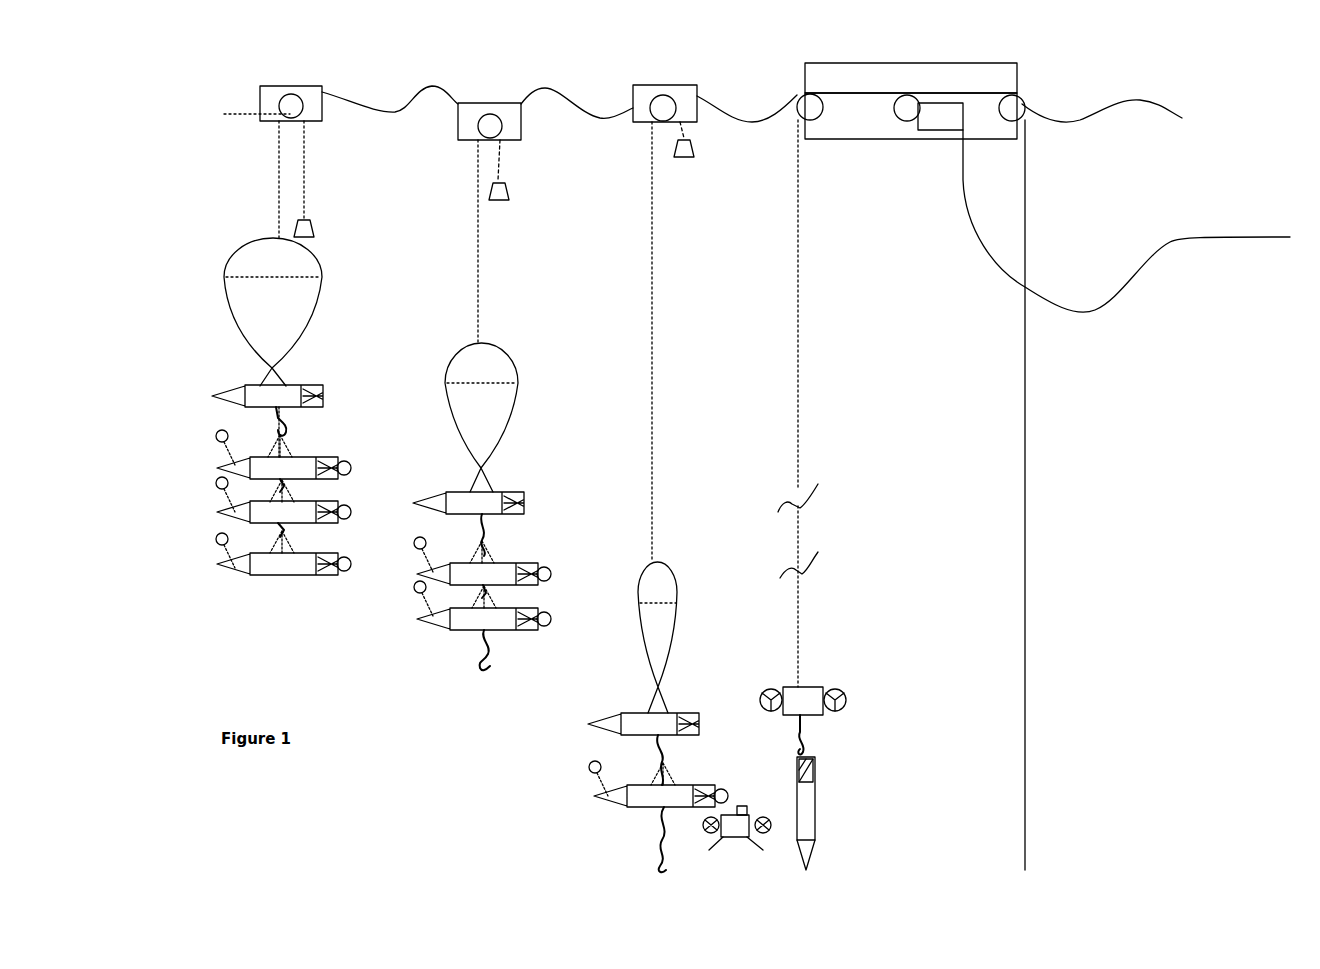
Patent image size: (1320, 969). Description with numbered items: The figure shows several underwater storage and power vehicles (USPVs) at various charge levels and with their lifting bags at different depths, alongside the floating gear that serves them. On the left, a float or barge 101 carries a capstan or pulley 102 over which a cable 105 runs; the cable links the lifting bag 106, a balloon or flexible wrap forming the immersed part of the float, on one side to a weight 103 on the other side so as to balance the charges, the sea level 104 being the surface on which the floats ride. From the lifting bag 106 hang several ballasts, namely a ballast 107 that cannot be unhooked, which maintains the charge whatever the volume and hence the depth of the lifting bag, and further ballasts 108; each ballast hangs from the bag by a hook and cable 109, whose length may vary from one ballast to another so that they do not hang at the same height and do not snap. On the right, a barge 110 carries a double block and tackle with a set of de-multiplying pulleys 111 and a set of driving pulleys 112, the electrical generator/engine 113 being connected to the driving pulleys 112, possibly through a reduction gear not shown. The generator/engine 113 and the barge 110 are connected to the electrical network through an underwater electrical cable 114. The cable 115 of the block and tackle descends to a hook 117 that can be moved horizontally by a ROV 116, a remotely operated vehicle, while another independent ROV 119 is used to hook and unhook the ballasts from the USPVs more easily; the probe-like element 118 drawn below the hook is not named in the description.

The float or barge 101 is at (318, 92).
The capstan or pulley 102 is at (262, 107).
The weight 103 is at (307, 220).
The sea level 104 is at (565, 106).
The cable 105 is at (277, 183).
The lifting bag 106 is at (322, 277).
The ballast that cannot be unhooked 107 is at (300, 397).
The ballasts 108 is at (296, 578).
The hook and cable 109 is at (288, 428).
The barge 110 is at (1018, 63).
The set of de-multiplying pulleys 111 is at (800, 90).
The set of driving pulleys 112 is at (900, 118).
The electrical generator/engine 113 is at (953, 130).
The underwater electrical cable 114 is at (1243, 247).
The cable of a double block and tackle 115 is at (800, 360).
The ROV 116 is at (823, 690).
The hook 117 is at (808, 734).
The probe 118 is at (816, 800).
The independent ROV 119 is at (780, 789).